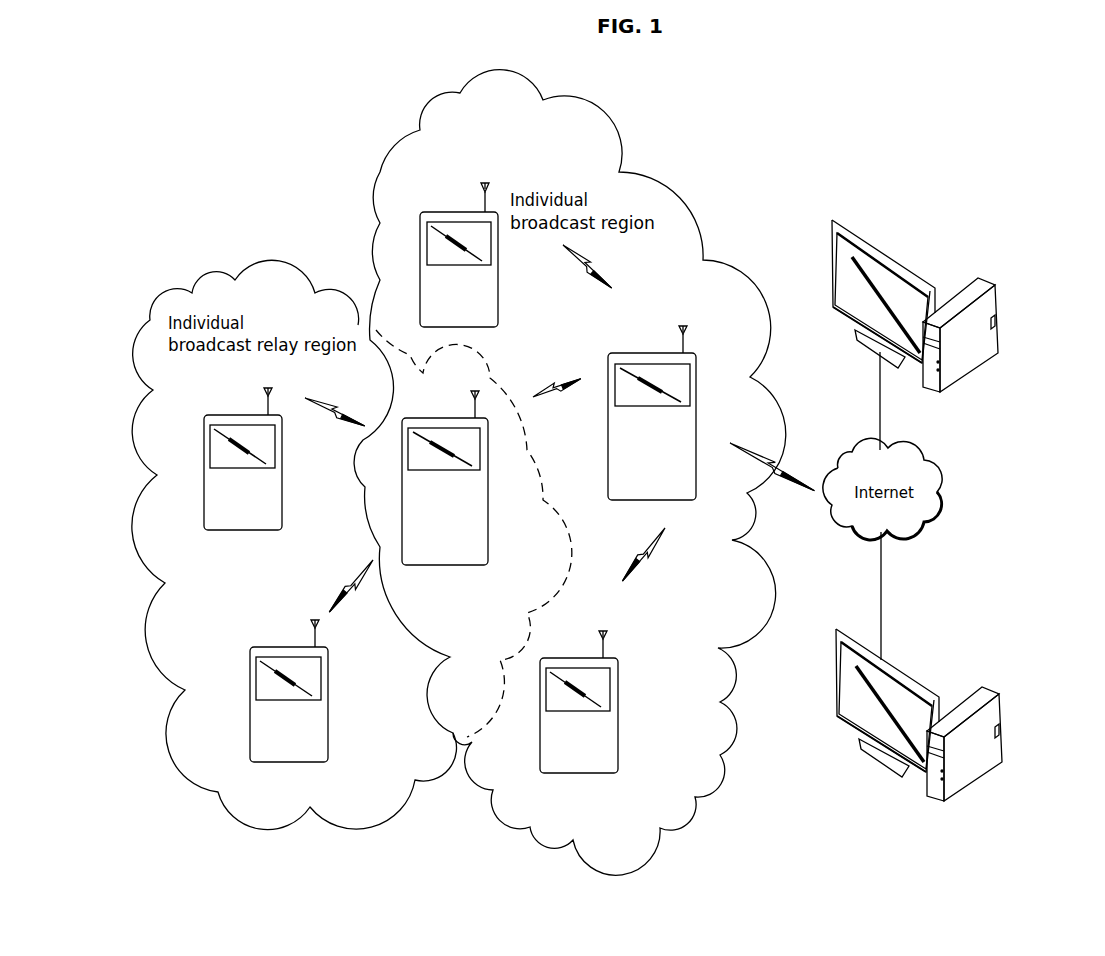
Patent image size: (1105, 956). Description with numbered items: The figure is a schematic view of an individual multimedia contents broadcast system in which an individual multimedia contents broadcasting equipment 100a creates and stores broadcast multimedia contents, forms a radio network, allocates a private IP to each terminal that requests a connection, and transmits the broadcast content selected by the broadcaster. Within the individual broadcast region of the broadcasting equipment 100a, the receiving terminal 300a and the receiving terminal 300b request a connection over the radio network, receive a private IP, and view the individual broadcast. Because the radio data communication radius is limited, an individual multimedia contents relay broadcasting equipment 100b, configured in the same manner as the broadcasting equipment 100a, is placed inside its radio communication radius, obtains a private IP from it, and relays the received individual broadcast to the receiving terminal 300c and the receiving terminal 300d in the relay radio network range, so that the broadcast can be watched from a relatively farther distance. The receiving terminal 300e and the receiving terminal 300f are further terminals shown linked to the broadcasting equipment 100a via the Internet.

The receiving terminal 300a is at (443, 215).
The receiving terminal 300b is at (575, 770).
The receiving terminal 300c is at (205, 477).
The receiving terminal 300d is at (287, 755).
The receiving terminal 300e is at (985, 286).
The receiving terminal 300f is at (990, 695).
The individual multimedia contents broadcasting equipment 100a is at (688, 427).
The individual multimedia contents relay broadcasting equipment 100b is at (457, 558).